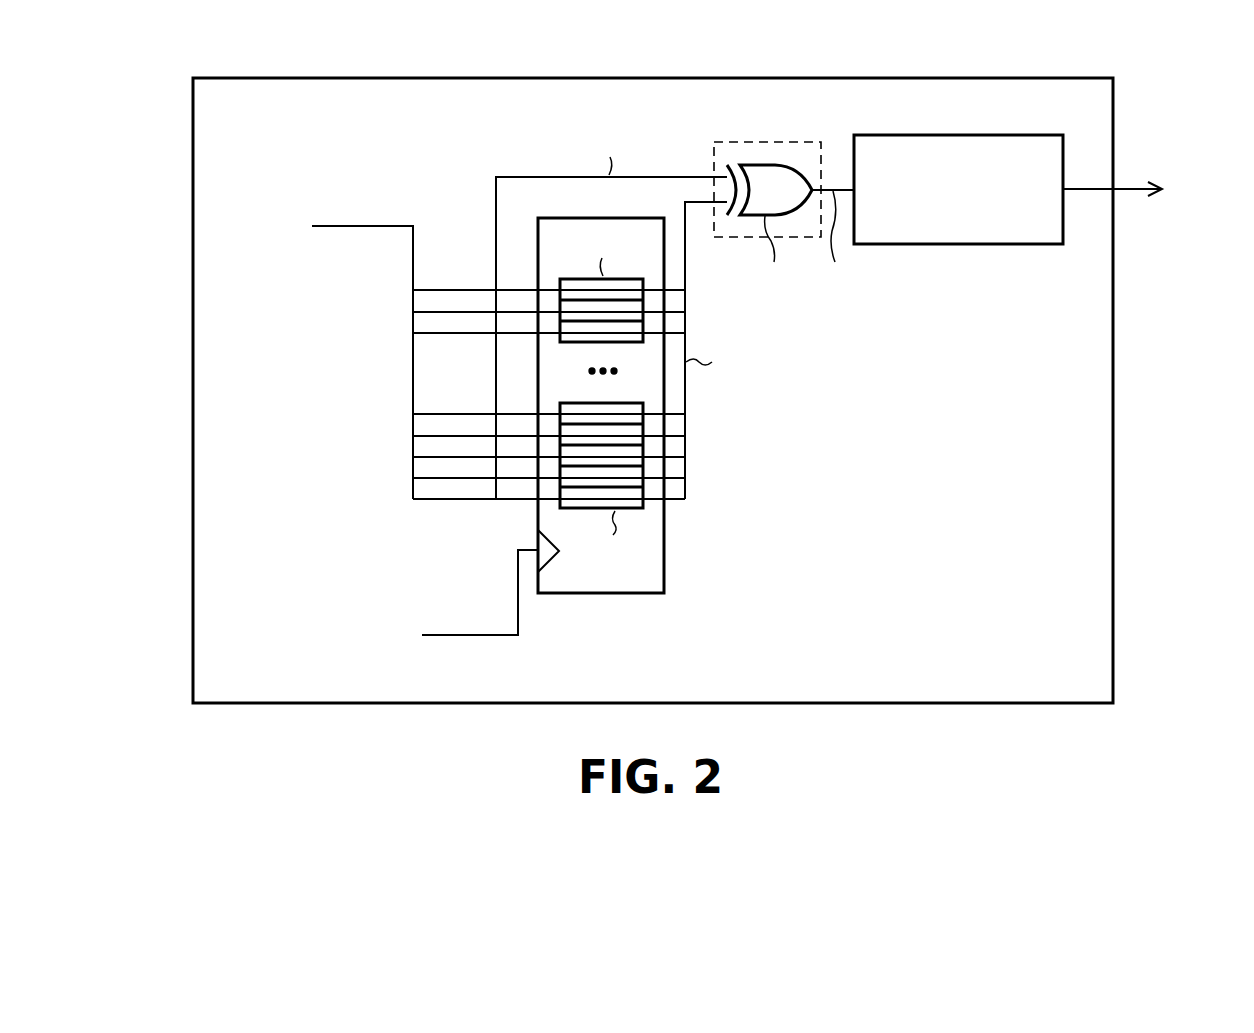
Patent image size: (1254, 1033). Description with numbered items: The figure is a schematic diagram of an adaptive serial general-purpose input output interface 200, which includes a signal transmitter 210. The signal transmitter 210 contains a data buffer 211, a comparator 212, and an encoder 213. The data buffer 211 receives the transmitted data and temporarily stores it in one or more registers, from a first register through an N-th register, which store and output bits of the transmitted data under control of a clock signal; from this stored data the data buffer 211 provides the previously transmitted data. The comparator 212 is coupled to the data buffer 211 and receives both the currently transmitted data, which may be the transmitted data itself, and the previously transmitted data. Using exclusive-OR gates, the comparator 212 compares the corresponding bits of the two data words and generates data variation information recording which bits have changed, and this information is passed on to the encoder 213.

The adaptive serial general-purpose input output interface 200 is at (702, 411).
The signal transmitter 210 is at (690, 390).
The data buffer 211 is at (600, 596).
The comparator 212 is at (724, 238).
The encoder 213 is at (958, 246).